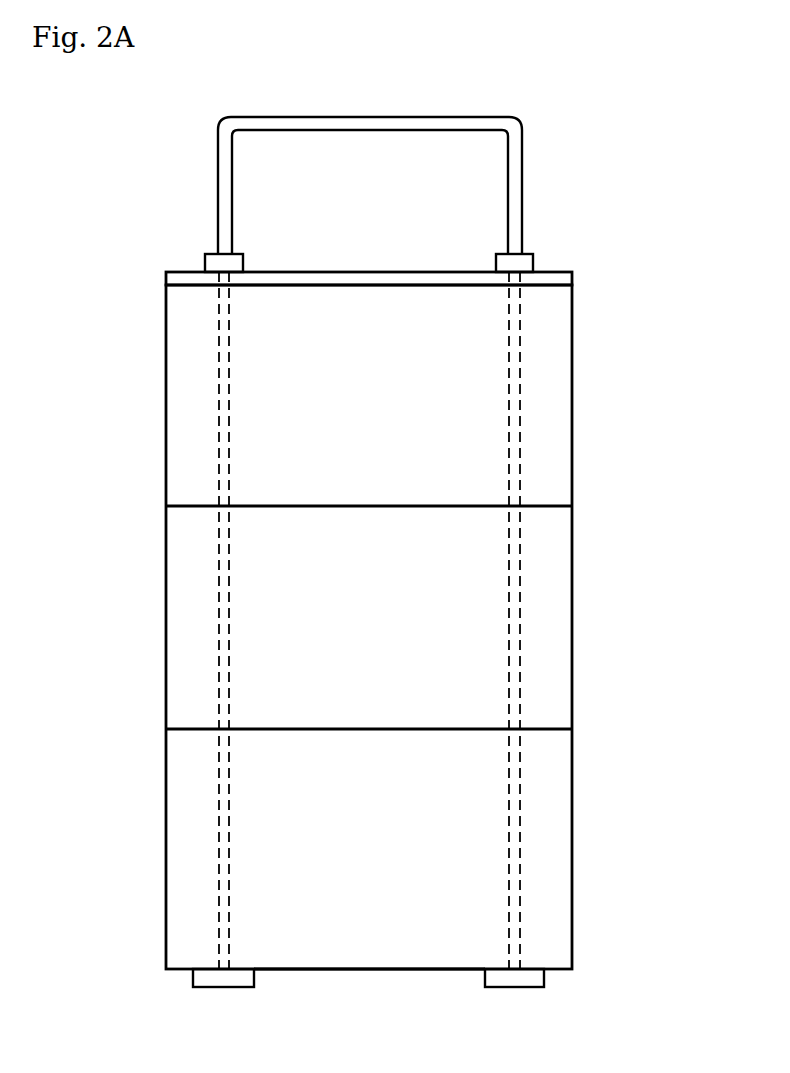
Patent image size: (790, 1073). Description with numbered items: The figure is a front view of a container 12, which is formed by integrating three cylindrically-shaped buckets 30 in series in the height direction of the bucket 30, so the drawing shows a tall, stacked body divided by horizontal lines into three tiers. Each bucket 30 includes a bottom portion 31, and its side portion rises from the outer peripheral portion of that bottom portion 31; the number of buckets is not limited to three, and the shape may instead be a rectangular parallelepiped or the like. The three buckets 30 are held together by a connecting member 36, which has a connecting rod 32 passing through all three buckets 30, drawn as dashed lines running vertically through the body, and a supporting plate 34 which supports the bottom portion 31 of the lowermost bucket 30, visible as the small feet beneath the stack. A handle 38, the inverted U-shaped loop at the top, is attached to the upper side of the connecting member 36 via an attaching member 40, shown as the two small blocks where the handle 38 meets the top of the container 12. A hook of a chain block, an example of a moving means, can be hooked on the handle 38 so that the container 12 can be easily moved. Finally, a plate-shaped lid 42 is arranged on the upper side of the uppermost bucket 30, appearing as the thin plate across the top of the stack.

The container 12 is at (620, 205).
The bucket 30 is at (573, 422).
The bottom portion 31 is at (436, 970).
The connecting rod 32 is at (520, 926).
The supporting plate 34 is at (545, 981).
The connecting member 36 is at (632, 885).
The handle 38 is at (523, 118).
The attaching member 40 is at (534, 265).
The lid 42 is at (573, 280).